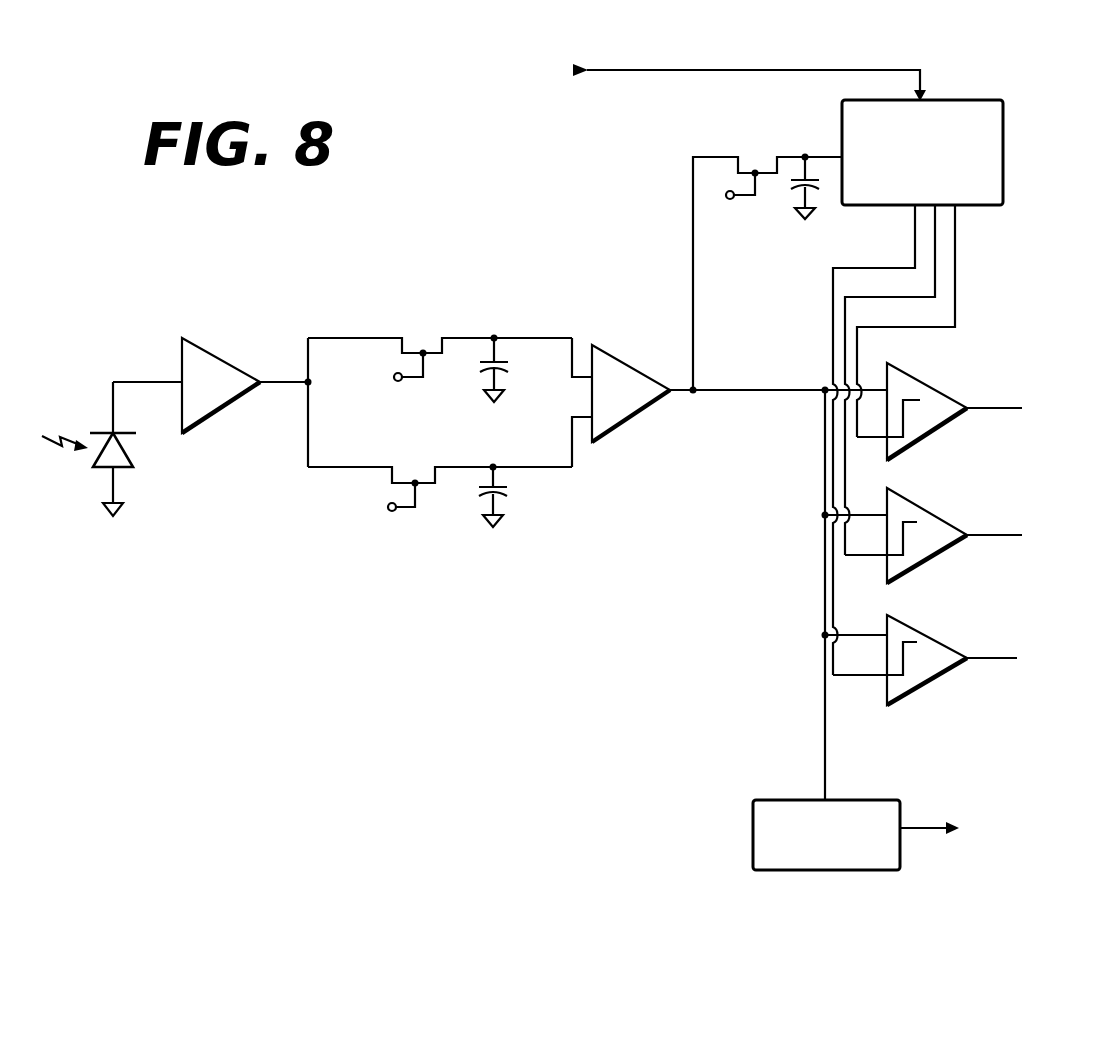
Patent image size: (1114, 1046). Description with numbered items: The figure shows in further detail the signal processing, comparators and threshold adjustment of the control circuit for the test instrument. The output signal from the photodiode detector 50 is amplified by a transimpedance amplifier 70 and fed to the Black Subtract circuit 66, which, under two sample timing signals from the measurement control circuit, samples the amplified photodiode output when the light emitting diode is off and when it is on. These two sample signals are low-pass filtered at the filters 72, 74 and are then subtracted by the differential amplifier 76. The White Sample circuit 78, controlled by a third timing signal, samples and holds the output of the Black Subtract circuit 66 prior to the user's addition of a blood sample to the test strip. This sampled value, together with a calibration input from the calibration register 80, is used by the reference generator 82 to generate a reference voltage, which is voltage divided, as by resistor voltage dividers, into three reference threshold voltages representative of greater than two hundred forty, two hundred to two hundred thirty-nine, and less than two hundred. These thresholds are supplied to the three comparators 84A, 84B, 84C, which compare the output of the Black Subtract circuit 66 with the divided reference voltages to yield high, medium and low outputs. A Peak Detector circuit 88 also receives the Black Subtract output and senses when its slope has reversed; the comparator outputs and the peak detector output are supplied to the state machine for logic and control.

The photodiode detector 50 is at (128, 452).
The transimpedance amplifier 70 is at (225, 406).
The Black Subtract circuit 66 is at (489, 320).
The low-pass filter 72 is at (524, 366).
The low-pass filter 74 is at (516, 502).
The differential amplifier 76 is at (626, 358).
The White Sample circuit 78 is at (730, 140).
The calibration register 80 is at (732, 71).
The reference generator 82 is at (1003, 157).
The comparator 84A is at (938, 387).
The comparator 84B is at (937, 515).
The comparator 84C is at (937, 637).
The Peak Detector circuit 88 is at (868, 798).